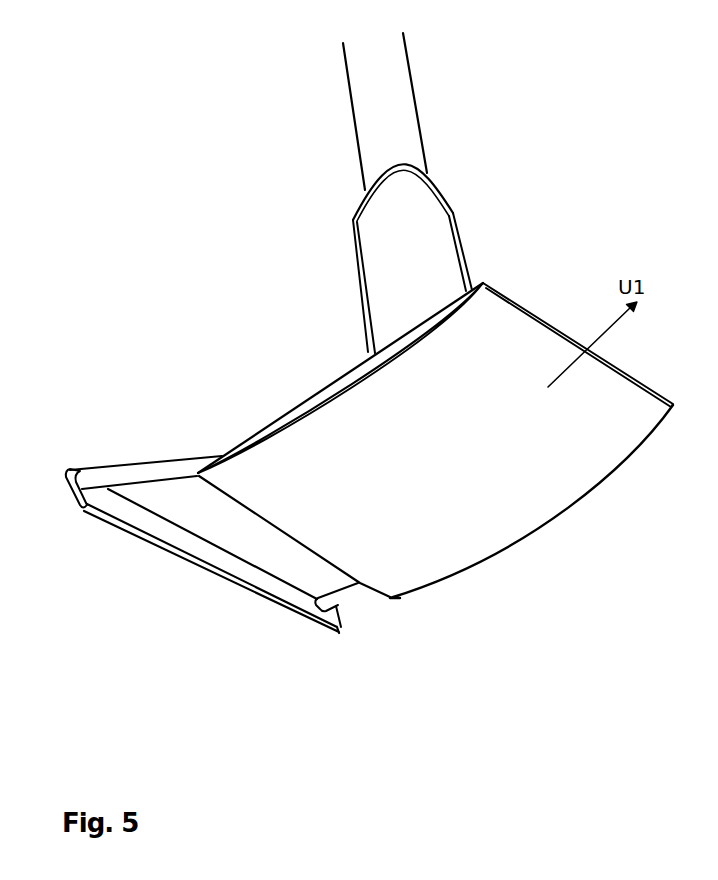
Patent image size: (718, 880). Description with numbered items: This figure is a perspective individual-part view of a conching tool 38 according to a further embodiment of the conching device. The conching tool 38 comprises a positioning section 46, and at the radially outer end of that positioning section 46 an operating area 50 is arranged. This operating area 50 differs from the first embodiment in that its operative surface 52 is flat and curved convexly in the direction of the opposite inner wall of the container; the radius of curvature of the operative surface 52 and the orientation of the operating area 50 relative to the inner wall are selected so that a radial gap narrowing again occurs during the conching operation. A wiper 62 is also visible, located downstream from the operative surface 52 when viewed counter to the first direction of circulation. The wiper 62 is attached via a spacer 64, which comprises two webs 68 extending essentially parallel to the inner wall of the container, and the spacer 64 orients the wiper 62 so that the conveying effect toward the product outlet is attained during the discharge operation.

The conching tool 38 is at (542, 143).
The positioning section 46 is at (398, 118).
The operating area 50 is at (312, 403).
The operative surface 52 is at (408, 445).
The wiper 62 is at (207, 552).
The spacer 64 is at (136, 410).
The web 68 is at (93, 477).